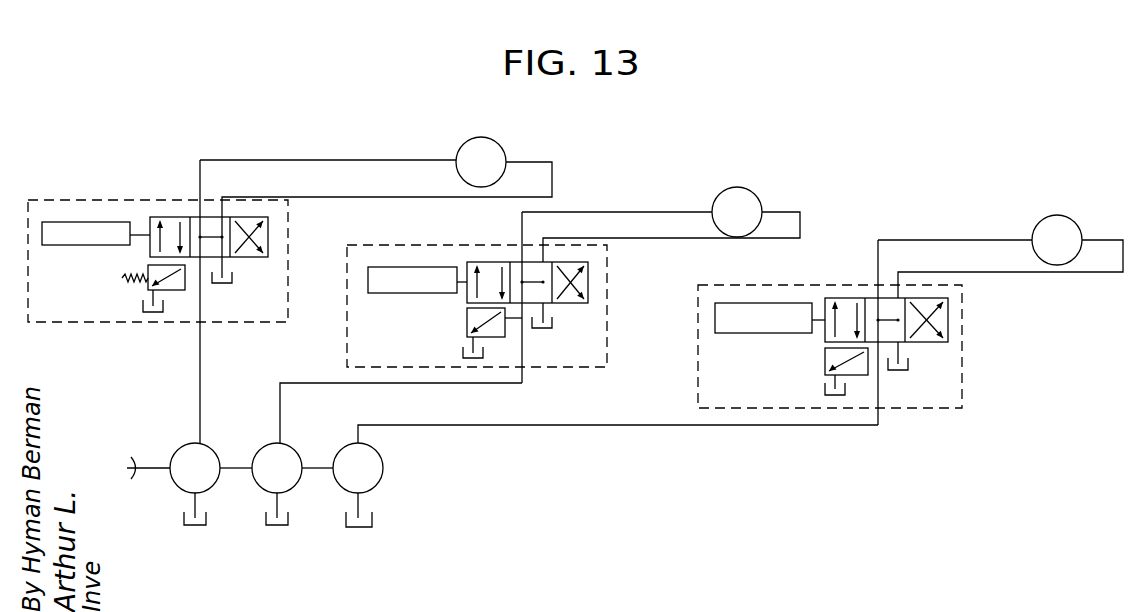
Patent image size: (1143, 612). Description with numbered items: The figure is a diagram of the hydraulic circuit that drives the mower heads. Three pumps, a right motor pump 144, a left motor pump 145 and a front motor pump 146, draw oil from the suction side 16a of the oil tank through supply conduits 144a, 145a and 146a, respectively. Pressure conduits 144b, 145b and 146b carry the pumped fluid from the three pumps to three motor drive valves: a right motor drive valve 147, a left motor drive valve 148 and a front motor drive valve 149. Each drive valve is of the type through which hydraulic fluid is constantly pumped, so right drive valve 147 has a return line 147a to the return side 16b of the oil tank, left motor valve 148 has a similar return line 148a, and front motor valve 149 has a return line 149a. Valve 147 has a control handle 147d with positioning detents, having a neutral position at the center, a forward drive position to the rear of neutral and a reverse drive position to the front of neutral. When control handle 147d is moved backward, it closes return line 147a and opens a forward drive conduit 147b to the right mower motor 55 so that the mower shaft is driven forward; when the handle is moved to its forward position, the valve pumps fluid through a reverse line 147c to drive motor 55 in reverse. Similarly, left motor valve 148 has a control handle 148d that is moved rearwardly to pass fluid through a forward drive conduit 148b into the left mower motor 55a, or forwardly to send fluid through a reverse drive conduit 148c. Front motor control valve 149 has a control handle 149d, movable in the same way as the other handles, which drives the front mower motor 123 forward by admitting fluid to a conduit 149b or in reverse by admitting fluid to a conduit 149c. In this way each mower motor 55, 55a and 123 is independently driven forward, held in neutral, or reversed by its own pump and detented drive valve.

The right mower motor 55 is at (462, 138).
The left mower motor 55a is at (1072, 200).
The front mower motor 123 is at (753, 172).
The right motor pump 144 is at (237, 433).
The supply conduit 144a is at (195, 500).
The pressure conduit 144b is at (199, 366).
The left motor pump 145 is at (383, 462).
The supply conduit 145a is at (358, 505).
The pressure conduit 145b is at (420, 418).
The front motor pump 146 is at (313, 433).
The supply conduit 146a is at (277, 502).
The pressure conduit 146b is at (308, 370).
The right motor drive valve 147 is at (122, 182).
The return line 147a is at (230, 274).
The forward drive conduit 147b is at (330, 146).
The reverse line 147c is at (347, 188).
The control handle 147d is at (78, 246).
The left motor drive valve 148 is at (823, 270).
The return line 148a is at (906, 357).
The forward drive conduit 148b is at (945, 234).
The reverse drive conduit 148c is at (1042, 273).
The control handle 148d is at (777, 334).
The front motor control valve 149 is at (427, 230).
The return line 149a is at (548, 317).
The conduit 149b is at (623, 192).
The conduit 149c is at (695, 239).
The control handle 149d is at (427, 294).
The suction side of the oil tank 16a is at (205, 527).
The return side of the oil tank 16b is at (143, 305).